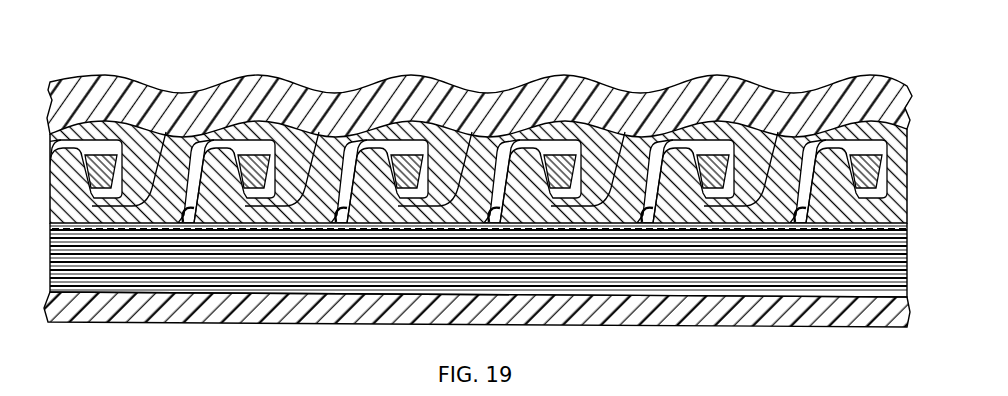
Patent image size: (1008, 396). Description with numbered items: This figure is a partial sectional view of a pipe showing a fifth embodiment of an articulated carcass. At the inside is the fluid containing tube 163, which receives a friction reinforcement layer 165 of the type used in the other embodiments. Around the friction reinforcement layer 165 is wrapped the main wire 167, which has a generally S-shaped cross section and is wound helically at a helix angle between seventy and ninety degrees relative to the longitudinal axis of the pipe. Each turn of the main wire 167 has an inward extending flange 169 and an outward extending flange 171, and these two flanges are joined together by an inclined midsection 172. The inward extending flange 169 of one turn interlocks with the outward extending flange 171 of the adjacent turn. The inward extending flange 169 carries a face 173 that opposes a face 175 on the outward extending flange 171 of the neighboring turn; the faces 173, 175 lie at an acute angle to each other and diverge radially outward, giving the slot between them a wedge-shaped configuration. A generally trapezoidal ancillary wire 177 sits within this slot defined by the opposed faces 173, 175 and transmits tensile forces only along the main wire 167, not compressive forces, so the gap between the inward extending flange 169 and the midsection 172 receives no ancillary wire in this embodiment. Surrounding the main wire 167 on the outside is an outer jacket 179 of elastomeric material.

The fluid containing tube 163 is at (640, 312).
The friction reinforcement layer 165 is at (755, 272).
The main wire 167 is at (741, 175).
The inward extending flange 169 is at (792, 138).
The outward extending flange 171 is at (636, 140).
The inclined midsection 172 is at (298, 133).
The face 173 is at (560, 146).
The face 175 is at (479, 137).
The ancillary wire 177 is at (415, 154).
The outer jacket 179 is at (205, 88).